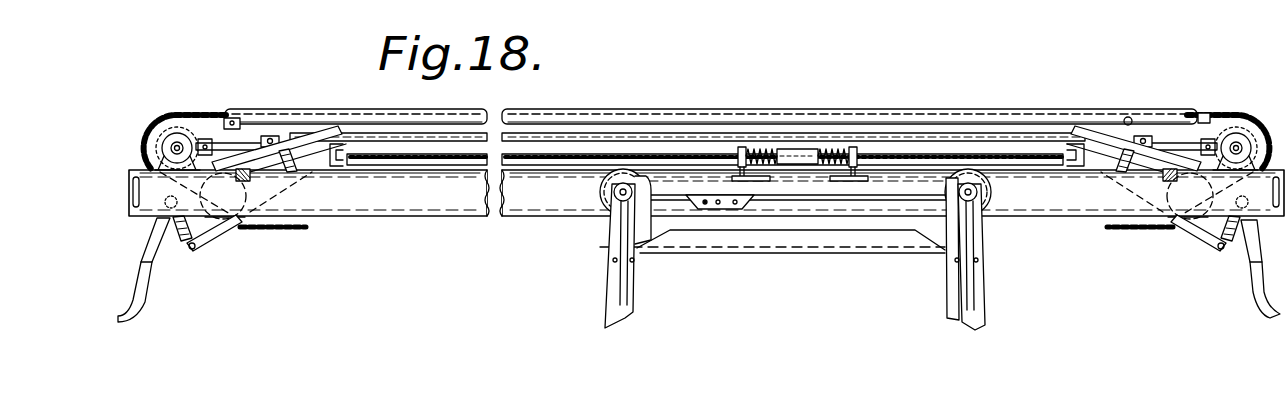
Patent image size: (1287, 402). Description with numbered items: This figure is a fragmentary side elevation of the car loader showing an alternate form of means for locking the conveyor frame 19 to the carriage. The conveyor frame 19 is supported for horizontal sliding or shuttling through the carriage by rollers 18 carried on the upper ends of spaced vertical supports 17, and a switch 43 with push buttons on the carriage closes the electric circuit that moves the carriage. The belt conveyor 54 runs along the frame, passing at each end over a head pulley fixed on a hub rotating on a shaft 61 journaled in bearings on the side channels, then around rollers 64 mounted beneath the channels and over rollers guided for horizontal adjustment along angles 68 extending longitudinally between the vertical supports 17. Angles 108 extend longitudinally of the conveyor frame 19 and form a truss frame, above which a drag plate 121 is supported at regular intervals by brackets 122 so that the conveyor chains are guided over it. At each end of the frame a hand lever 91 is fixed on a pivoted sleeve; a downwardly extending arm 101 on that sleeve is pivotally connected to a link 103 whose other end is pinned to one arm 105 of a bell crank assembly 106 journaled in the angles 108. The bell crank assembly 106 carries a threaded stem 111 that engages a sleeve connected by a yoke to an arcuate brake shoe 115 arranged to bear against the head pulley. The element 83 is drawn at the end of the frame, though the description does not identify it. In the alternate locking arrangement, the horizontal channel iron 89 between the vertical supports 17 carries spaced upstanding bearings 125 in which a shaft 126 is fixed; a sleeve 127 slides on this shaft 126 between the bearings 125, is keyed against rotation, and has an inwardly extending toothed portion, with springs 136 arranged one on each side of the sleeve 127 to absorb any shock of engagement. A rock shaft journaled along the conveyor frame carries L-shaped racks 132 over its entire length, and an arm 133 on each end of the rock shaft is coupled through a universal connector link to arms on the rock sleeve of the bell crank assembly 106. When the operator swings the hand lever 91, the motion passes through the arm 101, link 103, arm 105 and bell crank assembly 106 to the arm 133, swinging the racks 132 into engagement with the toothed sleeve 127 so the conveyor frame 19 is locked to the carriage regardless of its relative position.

The vertical supports 17 is at (633, 306).
The rollers 18 is at (603, 203).
The conveyor frame 19 is at (1073, 223).
The switch 43 is at (722, 209).
The belt conveyor 54 is at (1204, 113).
The shaft 61 is at (171, 147).
The rollers 64 is at (240, 223).
The angles 68 is at (704, 251).
The end slot 83 is at (128, 201).
The channel iron 89 is at (806, 197).
The hand lever 91 is at (146, 292).
The downwardly extending arm 101 is at (1238, 244).
The link 103 is at (208, 229).
The arm 105 is at (302, 137).
The bell crank assembly 106 is at (274, 129).
The angles 108 is at (1025, 134).
The threaded stem 111 is at (235, 138).
The brake shoe 115 is at (230, 118).
The drag plate 121 is at (1126, 117).
The brackets 122 is at (683, 116).
The bearings 125 is at (850, 149).
The shaft 126 is at (766, 153).
The sleeve 127 is at (806, 149).
The L-shaped racks 132 is at (500, 116).
The arm 133 is at (268, 118).
The springs 136 is at (833, 153).